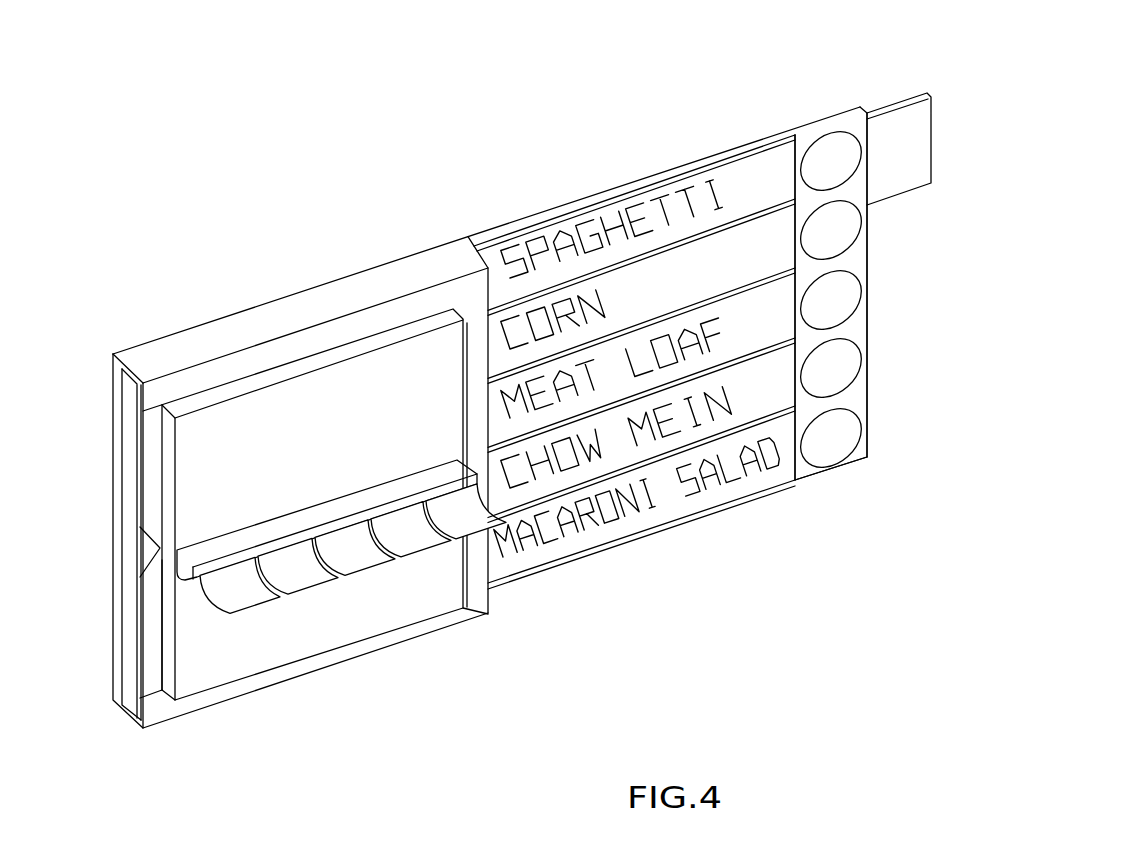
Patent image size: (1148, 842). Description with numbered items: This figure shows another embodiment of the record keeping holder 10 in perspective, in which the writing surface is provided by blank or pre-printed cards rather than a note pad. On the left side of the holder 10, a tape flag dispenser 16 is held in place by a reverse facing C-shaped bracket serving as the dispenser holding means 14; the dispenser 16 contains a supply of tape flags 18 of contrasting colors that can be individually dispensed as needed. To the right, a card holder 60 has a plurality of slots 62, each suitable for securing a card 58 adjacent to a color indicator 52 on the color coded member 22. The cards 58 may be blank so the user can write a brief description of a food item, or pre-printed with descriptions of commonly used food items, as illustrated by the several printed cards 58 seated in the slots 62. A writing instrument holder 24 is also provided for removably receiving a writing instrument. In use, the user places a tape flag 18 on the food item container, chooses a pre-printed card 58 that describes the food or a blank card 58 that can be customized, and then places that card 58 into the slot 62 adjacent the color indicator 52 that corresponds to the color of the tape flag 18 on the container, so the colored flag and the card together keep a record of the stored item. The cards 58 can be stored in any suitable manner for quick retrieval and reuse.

The record keeping holder 10 is at (237, 206).
The dispenser holding means 14 is at (342, 300).
The tape flag dispenser 16 is at (163, 641).
The tape flags 18 is at (430, 566).
The color coded member 22 is at (830, 492).
The writing instrument holder 24 is at (895, 122).
The color indicator 52 is at (835, 372).
The cards 58 is at (753, 170).
The card holder 60 is at (585, 181).
The slots 62 is at (665, 475).